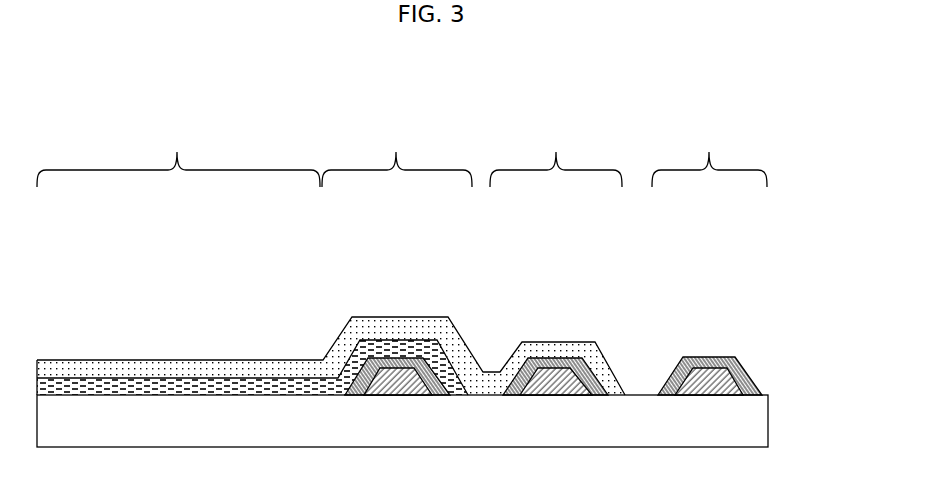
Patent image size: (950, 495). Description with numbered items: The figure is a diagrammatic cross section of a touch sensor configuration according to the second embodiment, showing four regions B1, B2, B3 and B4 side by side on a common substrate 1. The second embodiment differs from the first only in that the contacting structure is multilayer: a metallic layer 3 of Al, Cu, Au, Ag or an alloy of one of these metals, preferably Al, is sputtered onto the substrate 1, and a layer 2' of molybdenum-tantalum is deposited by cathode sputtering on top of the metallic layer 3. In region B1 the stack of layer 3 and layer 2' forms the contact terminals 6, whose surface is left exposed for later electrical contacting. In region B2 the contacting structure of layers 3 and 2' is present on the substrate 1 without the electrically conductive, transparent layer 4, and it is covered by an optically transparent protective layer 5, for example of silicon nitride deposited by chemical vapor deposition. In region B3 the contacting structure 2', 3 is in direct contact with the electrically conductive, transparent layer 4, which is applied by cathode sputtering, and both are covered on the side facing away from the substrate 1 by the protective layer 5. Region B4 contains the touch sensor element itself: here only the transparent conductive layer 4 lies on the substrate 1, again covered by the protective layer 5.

The substrate 1 is at (748, 428).
The layer of MoxTay 2' is at (604, 313).
The layer 3 is at (424, 357).
The electrically conductive, transparent layer 4 is at (197, 390).
The protective layer 5 is at (538, 350).
The contact terminals 6 is at (755, 325).
The region B1 is at (709, 153).
The region B2 is at (556, 153).
The region B3 is at (397, 153).
The region B4 is at (178, 153).